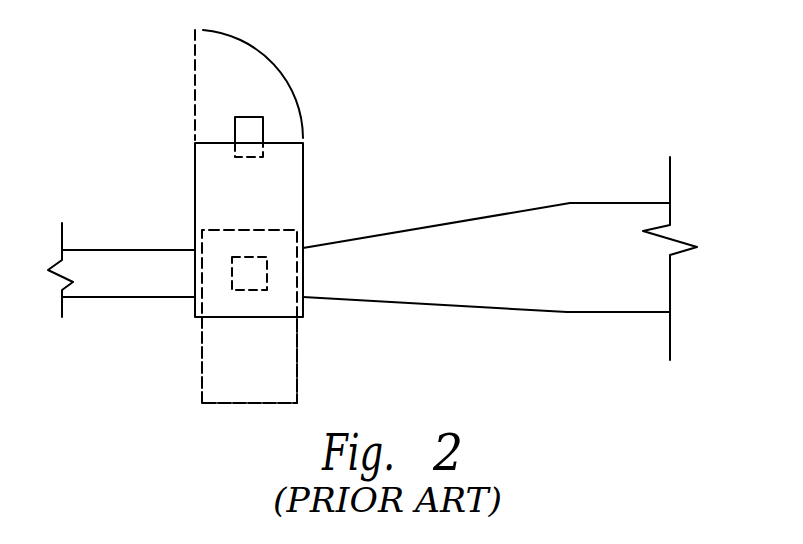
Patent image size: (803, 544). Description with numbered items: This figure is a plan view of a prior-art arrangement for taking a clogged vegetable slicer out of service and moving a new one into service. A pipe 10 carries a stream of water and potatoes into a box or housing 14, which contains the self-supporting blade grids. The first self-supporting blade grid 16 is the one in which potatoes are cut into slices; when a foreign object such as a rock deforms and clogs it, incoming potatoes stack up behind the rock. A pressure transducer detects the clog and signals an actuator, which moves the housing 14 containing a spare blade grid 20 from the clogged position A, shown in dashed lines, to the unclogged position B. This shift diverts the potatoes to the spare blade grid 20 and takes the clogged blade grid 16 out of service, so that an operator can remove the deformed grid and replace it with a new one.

The pipe 10 is at (467, 307).
The housing 14 is at (303, 172).
The self-supporting blade grid 16 is at (263, 128).
The spare blade grid 20 is at (267, 260).
The clogged position A is at (202, 342).
The unclogged position B is at (193, 182).